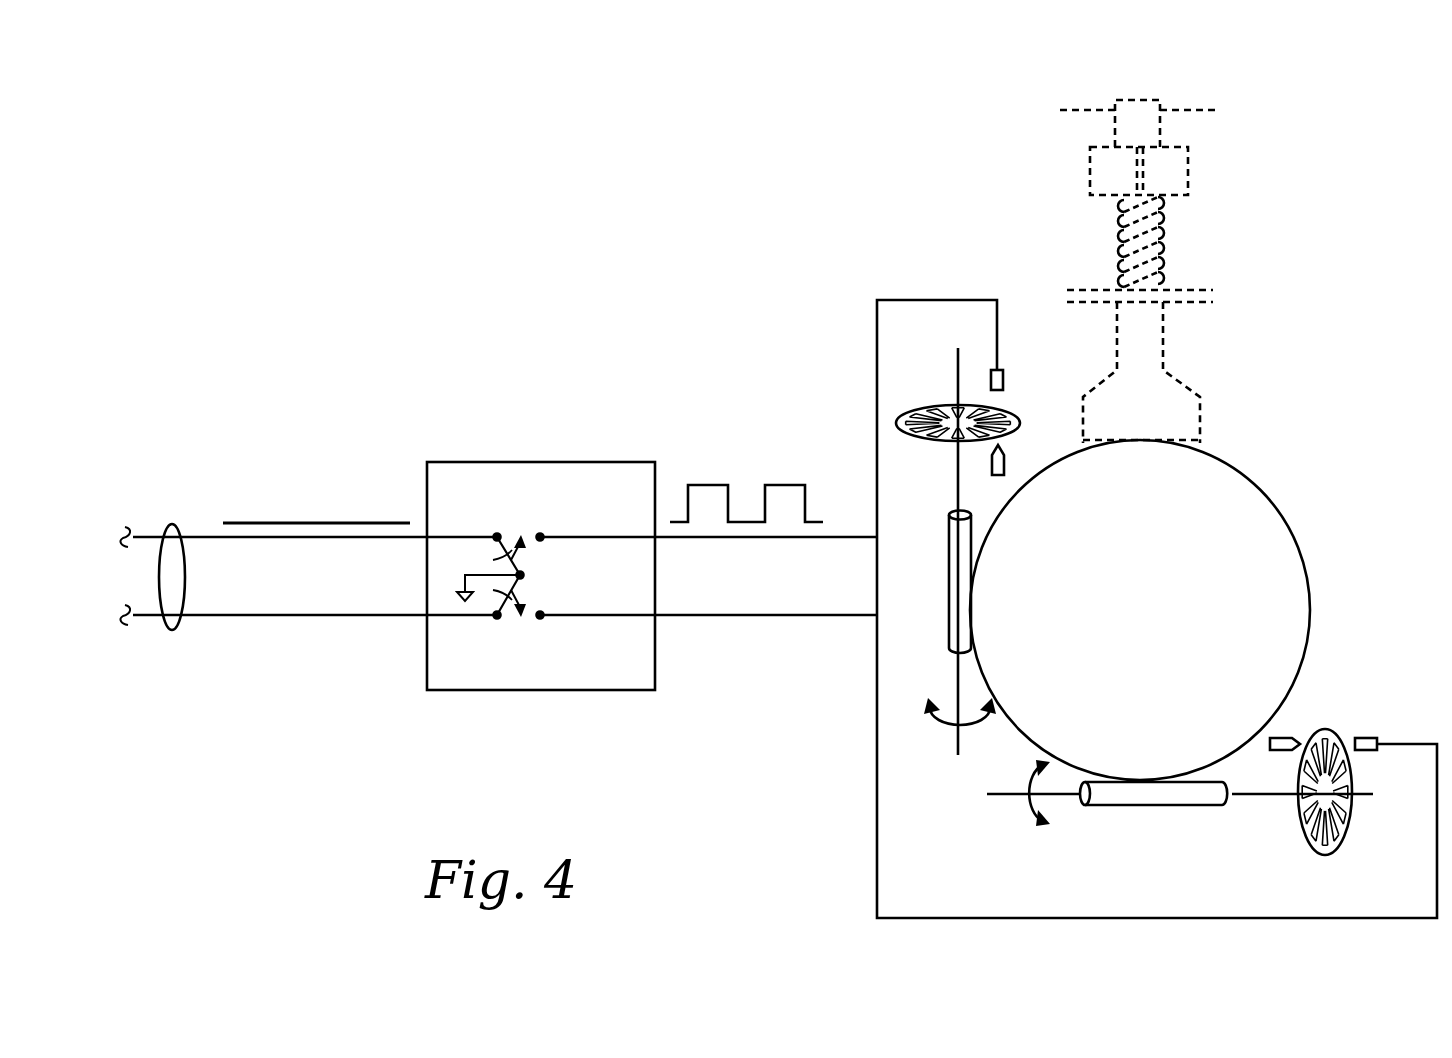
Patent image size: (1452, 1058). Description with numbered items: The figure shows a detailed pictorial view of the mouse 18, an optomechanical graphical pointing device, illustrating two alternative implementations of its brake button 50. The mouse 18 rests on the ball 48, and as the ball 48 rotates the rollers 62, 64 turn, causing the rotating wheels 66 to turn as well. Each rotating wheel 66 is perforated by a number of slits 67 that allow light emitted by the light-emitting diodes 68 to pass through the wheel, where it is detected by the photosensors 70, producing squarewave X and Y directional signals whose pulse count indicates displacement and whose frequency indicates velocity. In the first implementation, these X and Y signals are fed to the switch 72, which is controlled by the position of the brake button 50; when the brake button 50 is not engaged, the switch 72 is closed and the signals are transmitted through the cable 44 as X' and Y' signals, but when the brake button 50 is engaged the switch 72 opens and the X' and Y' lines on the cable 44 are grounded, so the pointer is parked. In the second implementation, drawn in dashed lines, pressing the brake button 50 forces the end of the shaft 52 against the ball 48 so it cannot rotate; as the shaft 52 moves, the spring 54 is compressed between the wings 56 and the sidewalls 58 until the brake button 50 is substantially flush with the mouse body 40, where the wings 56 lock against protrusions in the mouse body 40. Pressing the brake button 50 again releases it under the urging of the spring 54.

The mouse 18 is at (578, 298).
The mouse body 40 is at (1095, 110).
The cable 44 is at (175, 528).
The ball 48 is at (1308, 562).
The brake button 50 is at (1140, 100).
The shaft 52 is at (1155, 345).
The spring 54 is at (1170, 225).
The wings 56 is at (1190, 150).
The sidewalls 58 is at (1195, 292).
The roller 62 is at (949, 590).
The roller 64 is at (1173, 806).
The rotating wheels 66 is at (1012, 414).
The slits 67 is at (933, 398).
The light-emitting diodes 68 is at (1006, 463).
The photosensors 70 is at (1003, 370).
The switch 72 is at (598, 462).